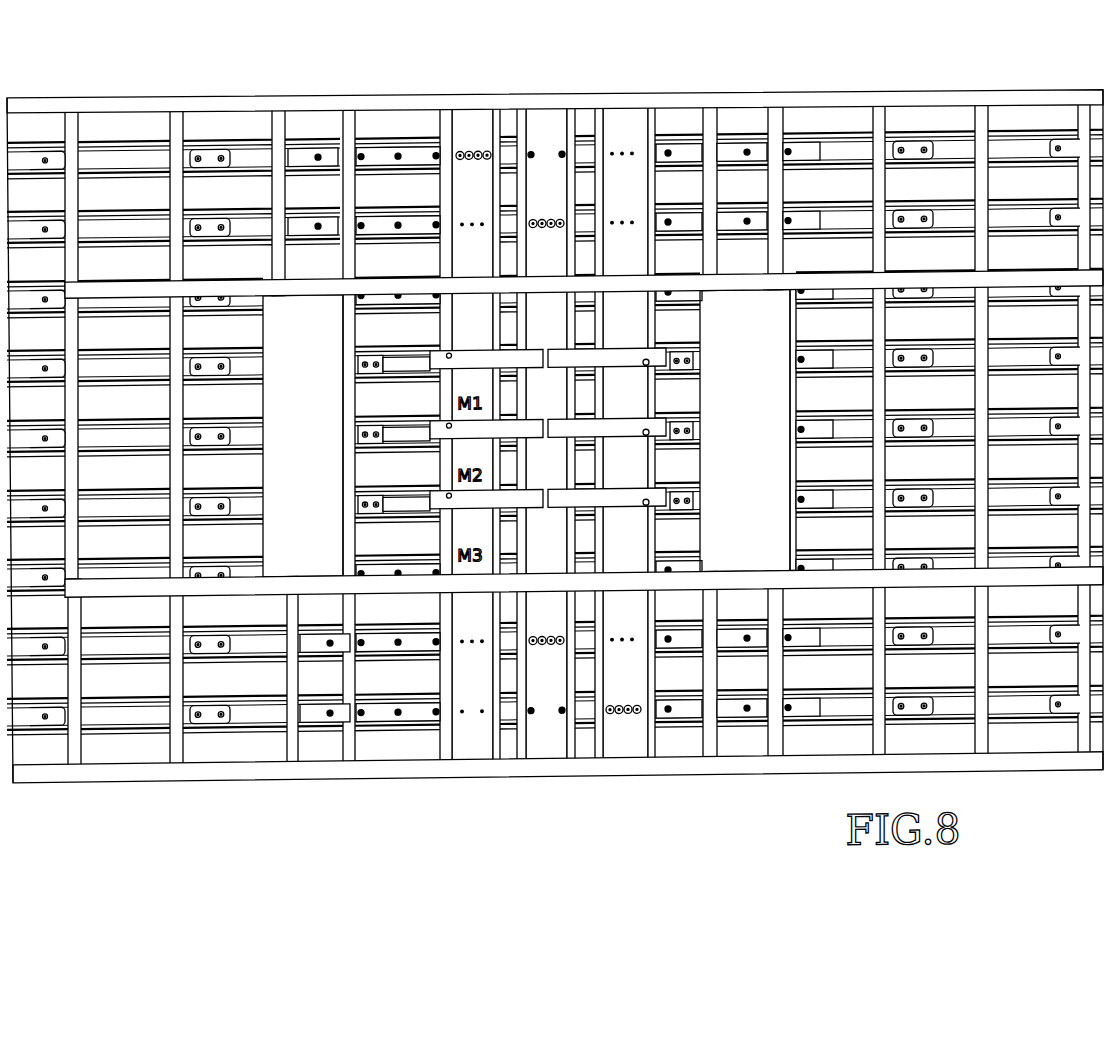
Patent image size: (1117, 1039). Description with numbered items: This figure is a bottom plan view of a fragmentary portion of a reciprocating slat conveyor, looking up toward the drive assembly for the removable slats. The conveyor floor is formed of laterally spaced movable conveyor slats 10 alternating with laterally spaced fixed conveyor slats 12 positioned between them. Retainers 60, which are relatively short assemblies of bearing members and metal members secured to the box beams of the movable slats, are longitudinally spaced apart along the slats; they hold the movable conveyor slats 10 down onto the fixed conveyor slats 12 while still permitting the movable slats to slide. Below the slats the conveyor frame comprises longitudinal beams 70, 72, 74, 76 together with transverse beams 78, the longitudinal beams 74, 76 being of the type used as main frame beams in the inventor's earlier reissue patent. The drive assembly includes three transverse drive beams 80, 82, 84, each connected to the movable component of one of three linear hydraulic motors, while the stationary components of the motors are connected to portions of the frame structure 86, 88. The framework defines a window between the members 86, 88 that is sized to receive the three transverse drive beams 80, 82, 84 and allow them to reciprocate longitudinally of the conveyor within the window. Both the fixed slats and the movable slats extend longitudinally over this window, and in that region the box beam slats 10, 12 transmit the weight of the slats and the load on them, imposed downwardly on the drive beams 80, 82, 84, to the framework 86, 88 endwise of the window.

The movable conveyor slat 10 is at (135, 160).
The fixed conveyor slat 12 is at (245, 195).
The retainer 60 is at (203, 166).
The longitudinal beam 70 is at (455, 103).
The longitudinal beam 72 is at (397, 773).
The longitudinal beam 74 is at (768, 292).
The longitudinal beam 76 is at (745, 586).
The transverse beam 78 is at (73, 138).
The transverse drive beam 80 is at (474, 709).
The transverse drive beam 82 is at (547, 717).
The transverse drive beam 84 is at (625, 706).
The frame structure member 86 is at (318, 386).
The frame structure member 88 is at (735, 424).